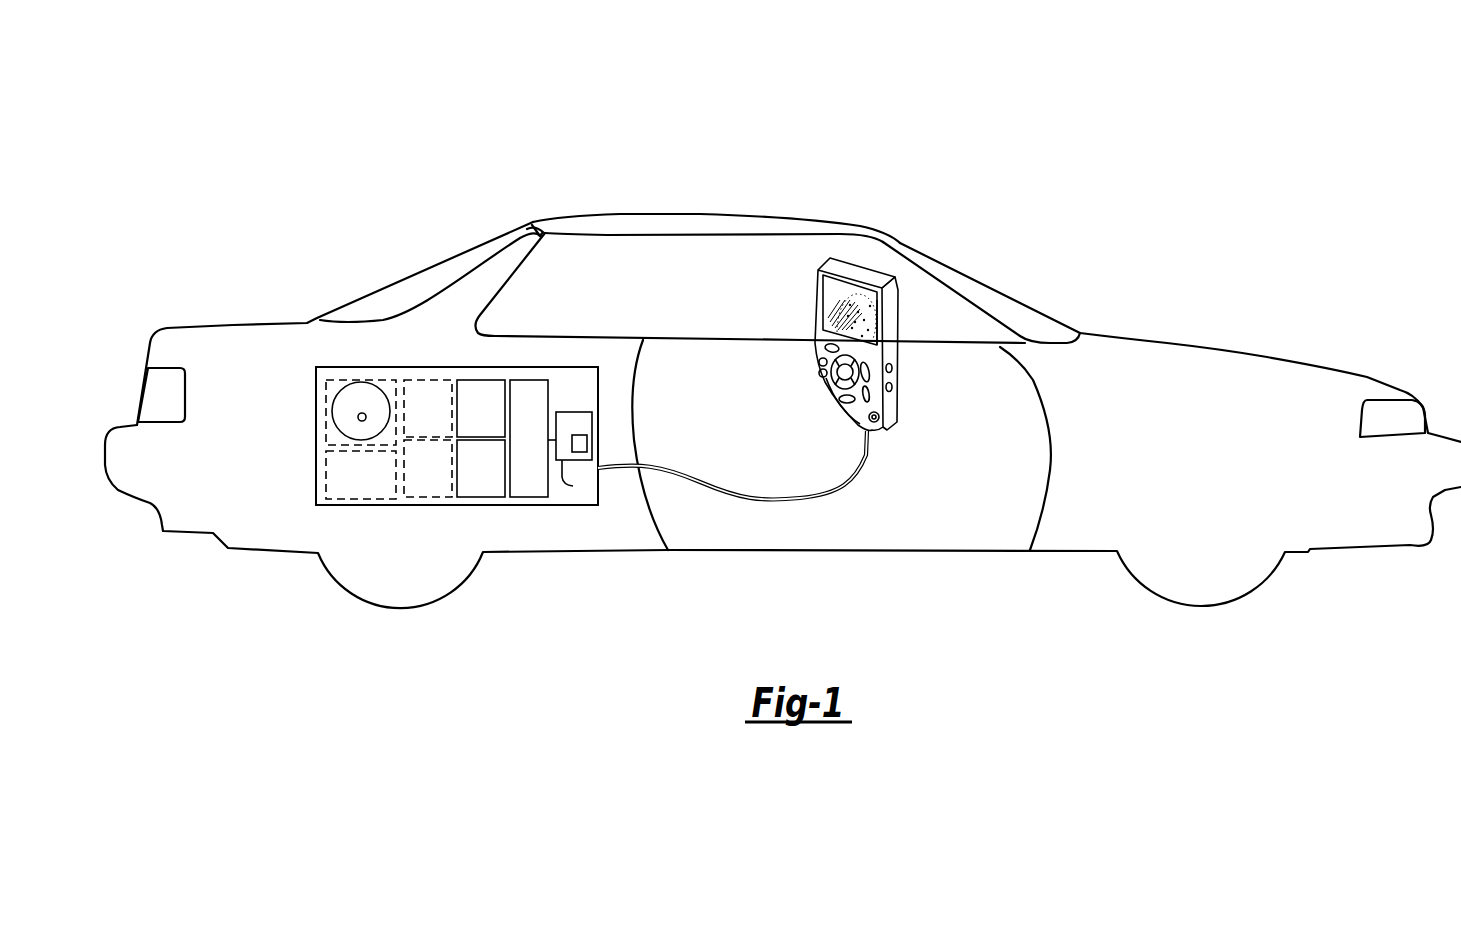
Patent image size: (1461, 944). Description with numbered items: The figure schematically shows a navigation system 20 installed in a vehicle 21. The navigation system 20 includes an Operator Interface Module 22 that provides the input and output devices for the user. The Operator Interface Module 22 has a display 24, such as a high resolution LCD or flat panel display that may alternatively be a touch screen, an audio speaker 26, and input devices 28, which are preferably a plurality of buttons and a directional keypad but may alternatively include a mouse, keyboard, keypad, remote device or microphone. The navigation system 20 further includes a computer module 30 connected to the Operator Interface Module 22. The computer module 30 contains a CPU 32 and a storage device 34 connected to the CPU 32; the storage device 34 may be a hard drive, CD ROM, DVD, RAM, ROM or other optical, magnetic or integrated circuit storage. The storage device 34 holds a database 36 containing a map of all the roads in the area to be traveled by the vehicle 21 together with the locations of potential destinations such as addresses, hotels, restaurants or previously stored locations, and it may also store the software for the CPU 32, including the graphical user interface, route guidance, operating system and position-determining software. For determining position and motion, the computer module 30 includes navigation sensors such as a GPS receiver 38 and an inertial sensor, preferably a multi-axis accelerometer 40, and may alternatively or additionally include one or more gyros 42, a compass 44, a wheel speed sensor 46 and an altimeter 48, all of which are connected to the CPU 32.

The navigation system 20 is at (622, 520).
The vehicle 21 is at (684, 201).
The Operator Interface Module 22 is at (839, 316).
The display 24 is at (832, 289).
The audio speaker 26 is at (877, 327).
The input devices 28 is at (830, 388).
The computer module 30 is at (457, 356).
The CPU 32 is at (519, 483).
The storage device 34 is at (714, 465).
The database 36 is at (580, 435).
The GPS receiver 38 is at (471, 431).
The multi-axis accelerometer 40 is at (472, 493).
The gyros 42 is at (418, 493).
The compass 44 is at (334, 430).
The wheel speed sensor 46 is at (418, 431).
The altimeter 48 is at (348, 492).